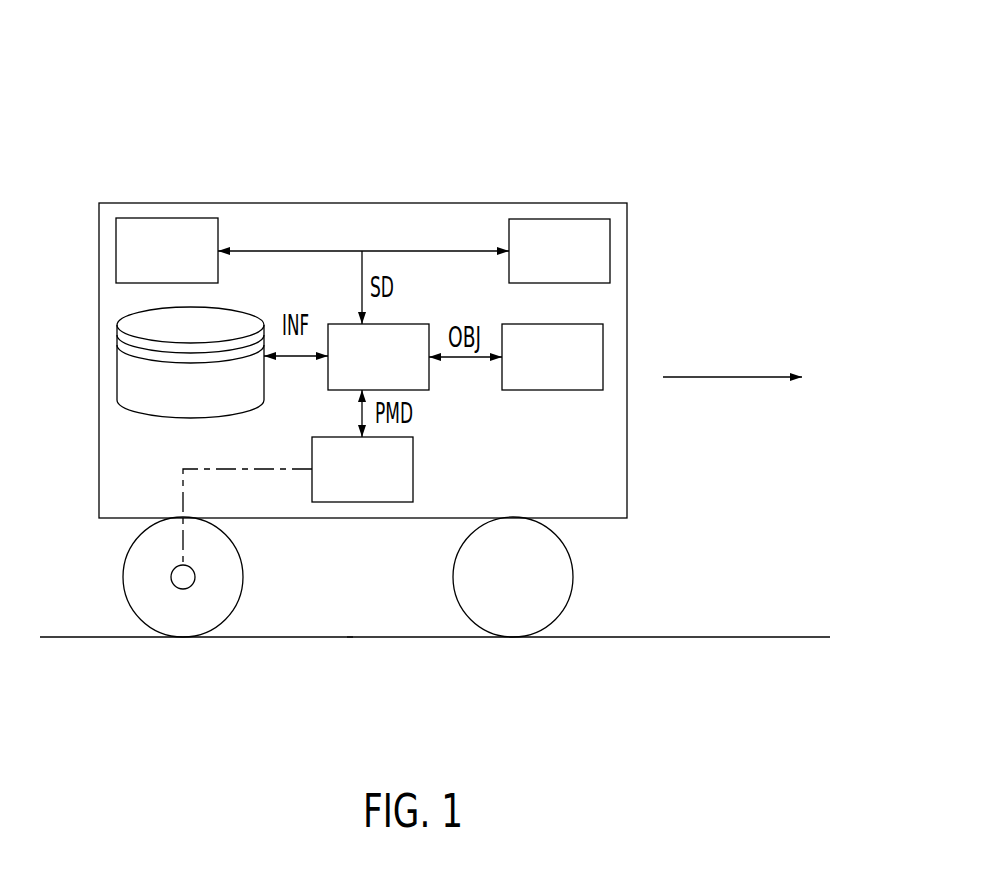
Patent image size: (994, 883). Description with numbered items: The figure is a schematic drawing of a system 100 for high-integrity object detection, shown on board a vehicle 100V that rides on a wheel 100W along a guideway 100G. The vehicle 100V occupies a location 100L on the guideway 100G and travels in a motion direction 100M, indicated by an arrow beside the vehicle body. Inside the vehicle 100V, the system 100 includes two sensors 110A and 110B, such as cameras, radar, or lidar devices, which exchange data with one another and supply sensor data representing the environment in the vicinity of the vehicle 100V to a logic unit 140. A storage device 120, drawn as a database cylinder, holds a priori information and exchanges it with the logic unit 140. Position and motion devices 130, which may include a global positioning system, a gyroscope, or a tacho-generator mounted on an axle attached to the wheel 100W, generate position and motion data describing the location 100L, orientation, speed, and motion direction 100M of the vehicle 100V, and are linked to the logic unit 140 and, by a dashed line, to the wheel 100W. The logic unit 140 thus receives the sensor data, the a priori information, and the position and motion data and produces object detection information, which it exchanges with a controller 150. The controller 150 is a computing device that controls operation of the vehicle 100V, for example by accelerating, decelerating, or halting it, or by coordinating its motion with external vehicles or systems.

The system 100 is at (594, 107).
The vehicle 100V is at (590, 502).
The wheel 100W is at (228, 575).
The guideway 100G is at (744, 675).
The location 100L is at (350, 650).
The motion direction 100M is at (732, 358).
The sensor 110A is at (188, 266).
The sensor 110B is at (580, 266).
The storage device 120 is at (203, 406).
The position and motion devices 130 is at (377, 483).
The logic unit 140 is at (393, 372).
The controller 150 is at (567, 372).